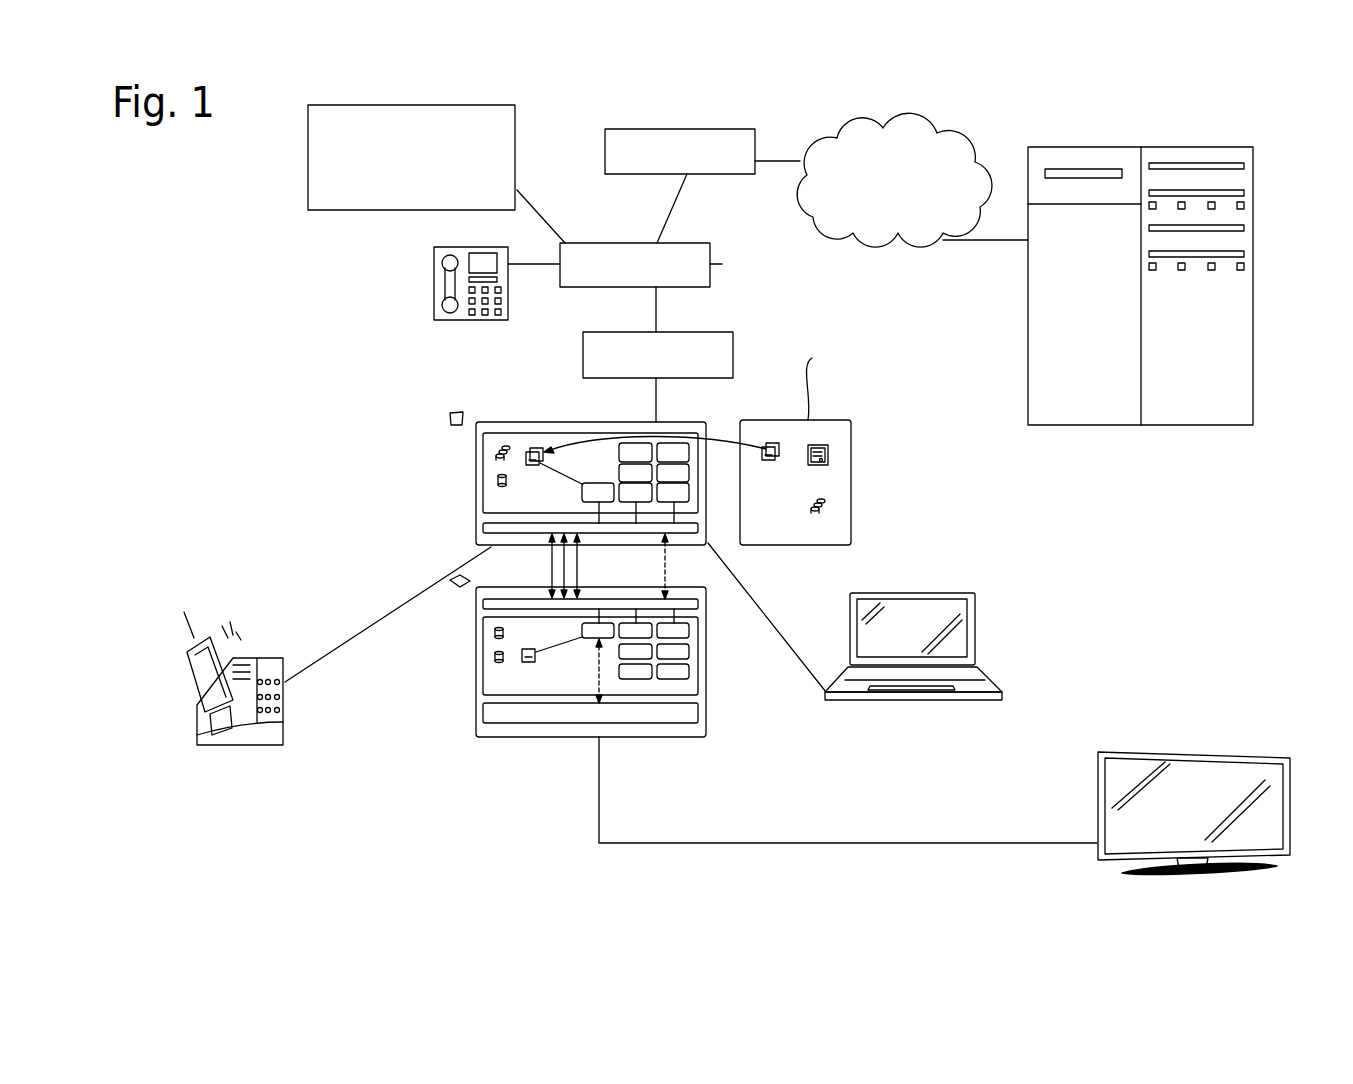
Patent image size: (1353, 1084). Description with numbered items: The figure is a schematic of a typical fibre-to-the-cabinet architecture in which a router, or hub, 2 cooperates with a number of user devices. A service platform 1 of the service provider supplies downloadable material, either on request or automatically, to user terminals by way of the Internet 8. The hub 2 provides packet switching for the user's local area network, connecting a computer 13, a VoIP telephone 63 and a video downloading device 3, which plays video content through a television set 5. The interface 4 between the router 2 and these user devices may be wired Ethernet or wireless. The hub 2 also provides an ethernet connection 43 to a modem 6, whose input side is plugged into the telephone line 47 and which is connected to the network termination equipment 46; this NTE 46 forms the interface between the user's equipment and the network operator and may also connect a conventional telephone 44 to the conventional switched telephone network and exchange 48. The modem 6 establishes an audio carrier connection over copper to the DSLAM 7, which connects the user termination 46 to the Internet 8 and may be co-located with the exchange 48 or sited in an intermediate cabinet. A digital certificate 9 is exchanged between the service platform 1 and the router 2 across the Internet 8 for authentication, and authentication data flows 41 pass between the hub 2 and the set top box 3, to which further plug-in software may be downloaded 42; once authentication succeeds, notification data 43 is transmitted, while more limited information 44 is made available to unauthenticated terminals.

The service platform 1 is at (1073, 425).
The router 2 is at (476, 492).
The video downloading device 3 is at (476, 652).
The interface 4 is at (793, 657).
The television set 5 is at (1160, 752).
The modem 6 is at (733, 352).
The DSLAM 7 is at (645, 129).
The Internet 8 is at (915, 249).
The digital certificate 9 is at (852, 490).
The computer 13 is at (917, 701).
The data flow 41 is at (552, 575).
The download 42 is at (564, 566).
The ethernet connection 43 is at (656, 391).
The conventional telephone 44 is at (434, 272).
The network termination equipment 46 is at (710, 264).
The telephone line 47 is at (602, 243).
The exchange 48 is at (308, 138).
The VoIP telephone 63 is at (283, 722).